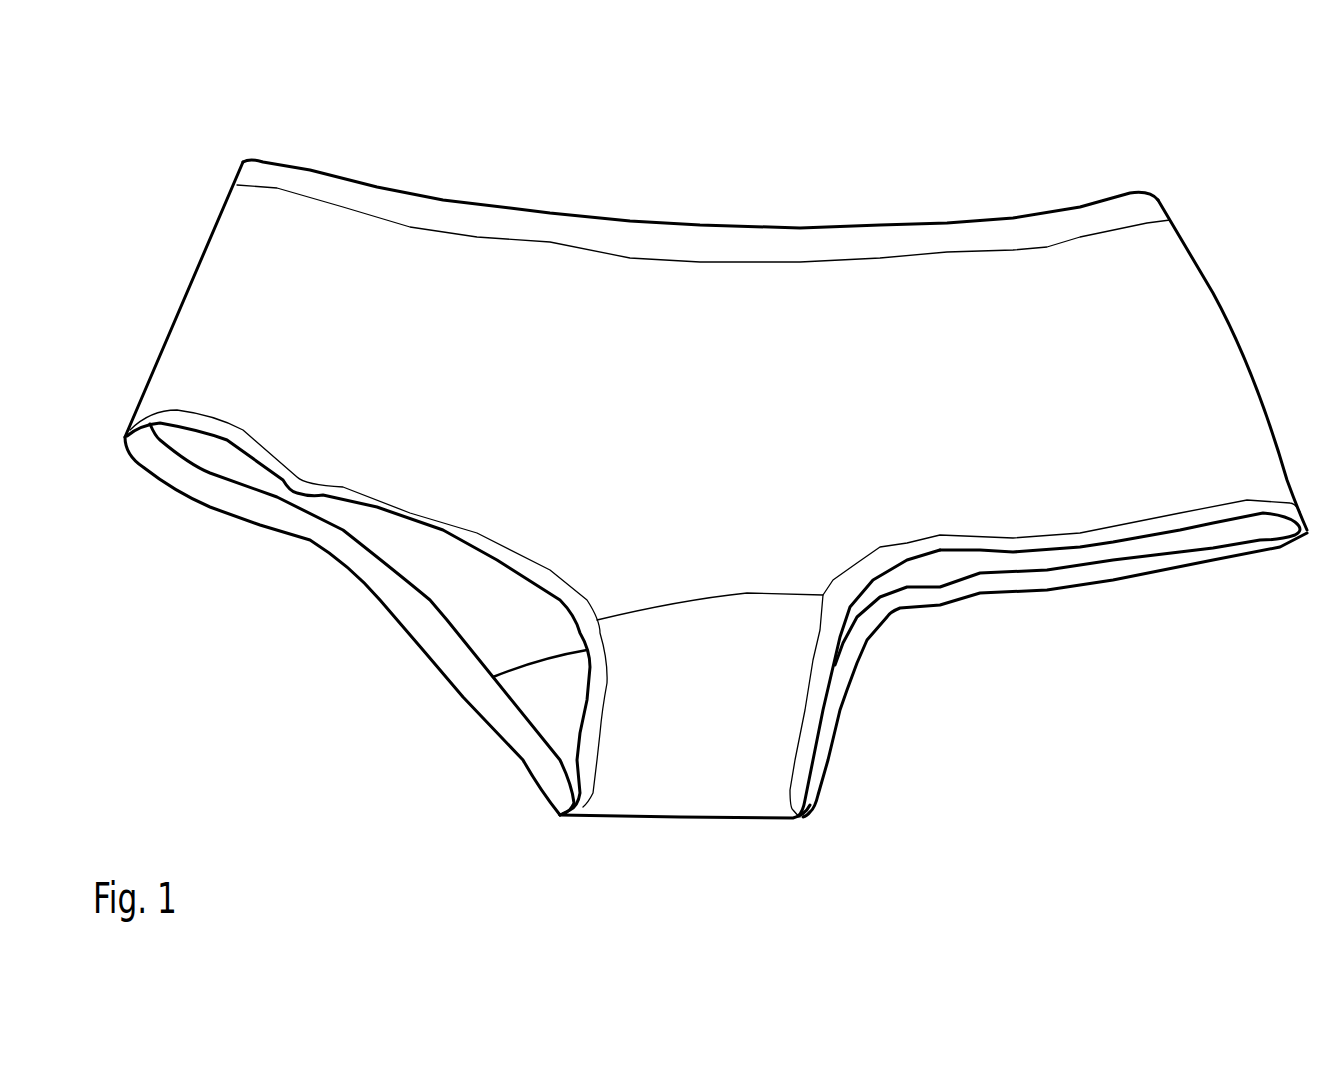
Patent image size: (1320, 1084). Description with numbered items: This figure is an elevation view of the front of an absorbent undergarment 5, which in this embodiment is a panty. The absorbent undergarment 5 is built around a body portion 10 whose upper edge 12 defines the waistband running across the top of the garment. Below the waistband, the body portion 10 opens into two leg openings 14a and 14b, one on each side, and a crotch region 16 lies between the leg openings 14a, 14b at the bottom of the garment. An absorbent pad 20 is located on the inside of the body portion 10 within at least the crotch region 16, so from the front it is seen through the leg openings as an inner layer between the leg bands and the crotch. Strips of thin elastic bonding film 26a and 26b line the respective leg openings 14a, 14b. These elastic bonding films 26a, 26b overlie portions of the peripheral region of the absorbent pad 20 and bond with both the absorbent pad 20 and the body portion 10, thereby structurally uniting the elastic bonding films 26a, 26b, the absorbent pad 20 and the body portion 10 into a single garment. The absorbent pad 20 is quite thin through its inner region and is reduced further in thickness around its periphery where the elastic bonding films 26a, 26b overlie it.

The absorbent undergarment 5 is at (260, 127).
The body portion 10 is at (730, 390).
The upper edge 12 is at (540, 215).
The leg opening 14a is at (332, 663).
The leg opening 14b is at (957, 693).
The crotch region 16 is at (815, 845).
The absorbent pad 20 is at (547, 710).
The elastic bonding film 26a is at (483, 690).
The elastic bonding film 26b is at (830, 703).